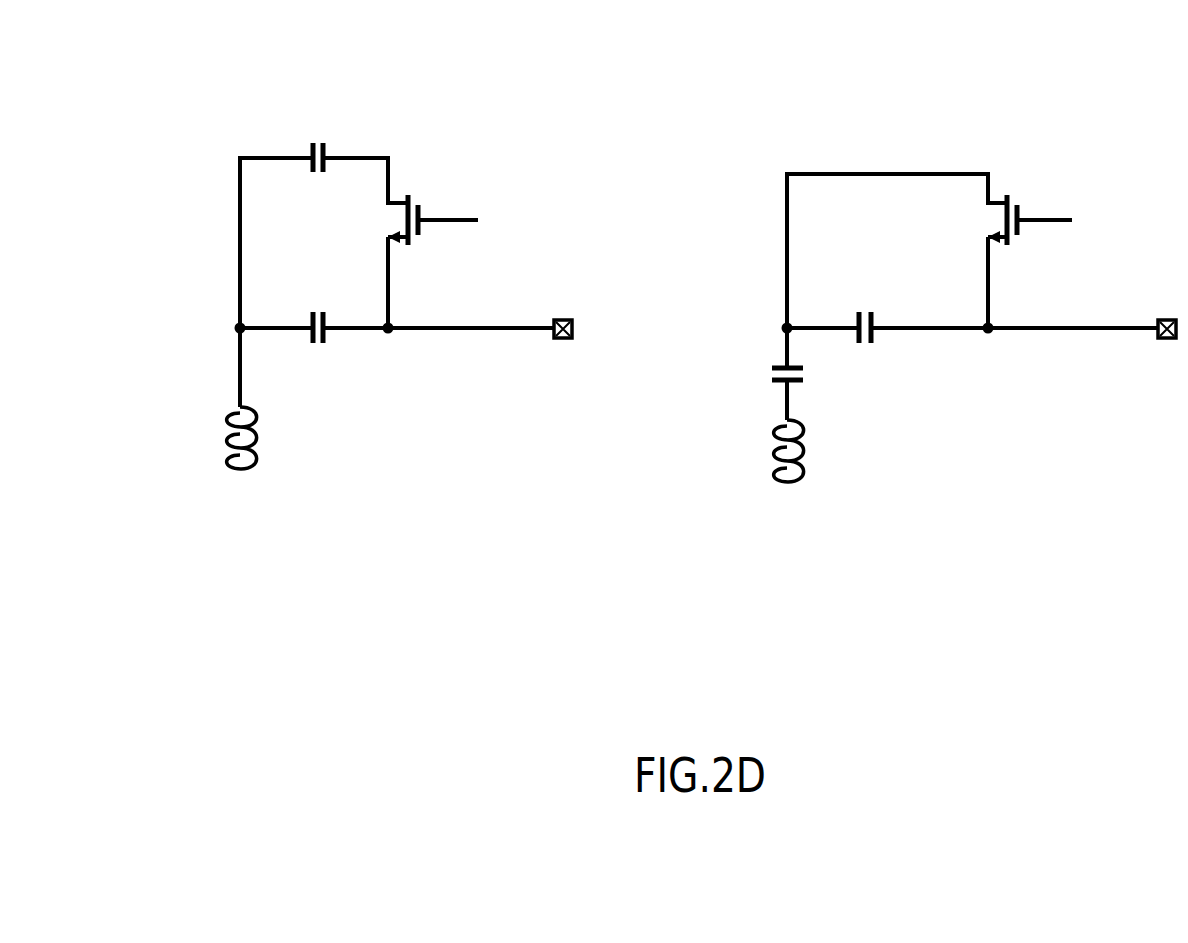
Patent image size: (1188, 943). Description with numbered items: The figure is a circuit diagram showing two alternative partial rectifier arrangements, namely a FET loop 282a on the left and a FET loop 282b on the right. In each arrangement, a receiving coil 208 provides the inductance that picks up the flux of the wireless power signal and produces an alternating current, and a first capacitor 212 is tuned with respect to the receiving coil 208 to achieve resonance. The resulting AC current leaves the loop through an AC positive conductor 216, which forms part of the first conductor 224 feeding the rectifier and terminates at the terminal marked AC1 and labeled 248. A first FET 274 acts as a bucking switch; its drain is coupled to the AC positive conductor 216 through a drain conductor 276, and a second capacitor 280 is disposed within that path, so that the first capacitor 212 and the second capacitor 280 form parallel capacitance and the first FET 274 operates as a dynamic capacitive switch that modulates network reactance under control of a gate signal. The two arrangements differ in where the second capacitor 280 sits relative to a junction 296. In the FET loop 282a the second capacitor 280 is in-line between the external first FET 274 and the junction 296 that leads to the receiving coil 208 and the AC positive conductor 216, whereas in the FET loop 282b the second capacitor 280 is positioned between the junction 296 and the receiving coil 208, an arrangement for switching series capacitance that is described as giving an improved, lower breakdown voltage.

The FET loop 282a is at (145, 76).
The FET loop 282b is at (722, 77).
The second capacitor 280 is at (294, 140).
The drain conductor 276 is at (226, 244).
The first FET 274 is at (426, 196).
The junction 296 is at (221, 325).
The first capacitor 212 is at (614, 341).
The AC positive conductor 216 is at (770, 359).
The first conductor 224 is at (414, 337).
The terminal AC1 248 is at (819, 315).
The receiving coil 208 is at (489, 405).